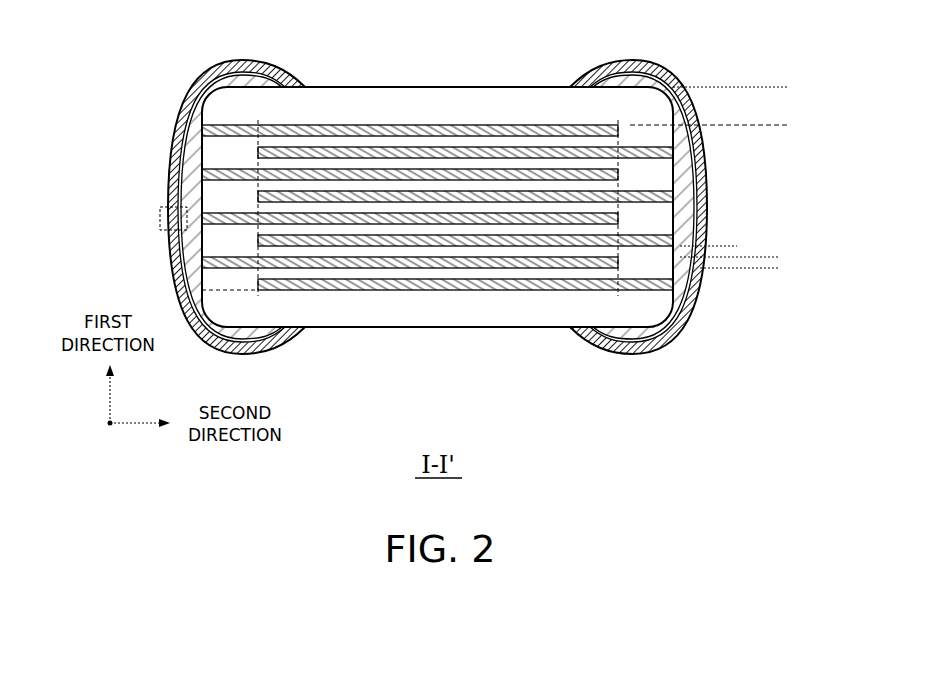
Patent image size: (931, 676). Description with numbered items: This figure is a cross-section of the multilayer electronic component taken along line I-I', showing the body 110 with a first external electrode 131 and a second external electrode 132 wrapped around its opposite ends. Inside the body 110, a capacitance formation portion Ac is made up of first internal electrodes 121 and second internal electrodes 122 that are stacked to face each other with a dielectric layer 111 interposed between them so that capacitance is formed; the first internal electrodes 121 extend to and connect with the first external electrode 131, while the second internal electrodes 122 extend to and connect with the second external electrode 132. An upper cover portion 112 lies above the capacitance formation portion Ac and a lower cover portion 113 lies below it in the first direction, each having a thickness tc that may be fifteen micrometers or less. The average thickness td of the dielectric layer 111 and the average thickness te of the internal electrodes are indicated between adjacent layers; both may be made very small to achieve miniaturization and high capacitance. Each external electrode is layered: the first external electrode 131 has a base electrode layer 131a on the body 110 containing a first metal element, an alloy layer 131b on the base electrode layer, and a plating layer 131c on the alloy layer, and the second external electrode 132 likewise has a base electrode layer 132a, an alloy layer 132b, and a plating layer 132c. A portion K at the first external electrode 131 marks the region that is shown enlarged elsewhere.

The body 110 is at (370, 87).
The dielectric layer 111 is at (309, 160).
The upper cover portion 112 is at (440, 100).
The lower cover portion 113 is at (485, 310).
The first internal electrode 121 is at (480, 125).
The second internal electrode 122 is at (548, 150).
The first external electrode 131 is at (166, 207).
The base electrode layer 131a is at (172, 163).
The alloy layer 131b is at (80, 150).
The plating layer 131c is at (167, 195).
The second external electrode 132 is at (707, 207).
The base electrode layer 132a is at (704, 163).
The alloy layer 132b is at (792, 150).
The plating layer 132c is at (708, 197).
The capacitance formation portion Ac is at (437, 198).
The portion K is at (162, 228).
The thickness of cover portion tc is at (780, 92).
The average thickness of dielectric layer td is at (733, 277).
The average thickness of internal electrode te is at (776, 249).